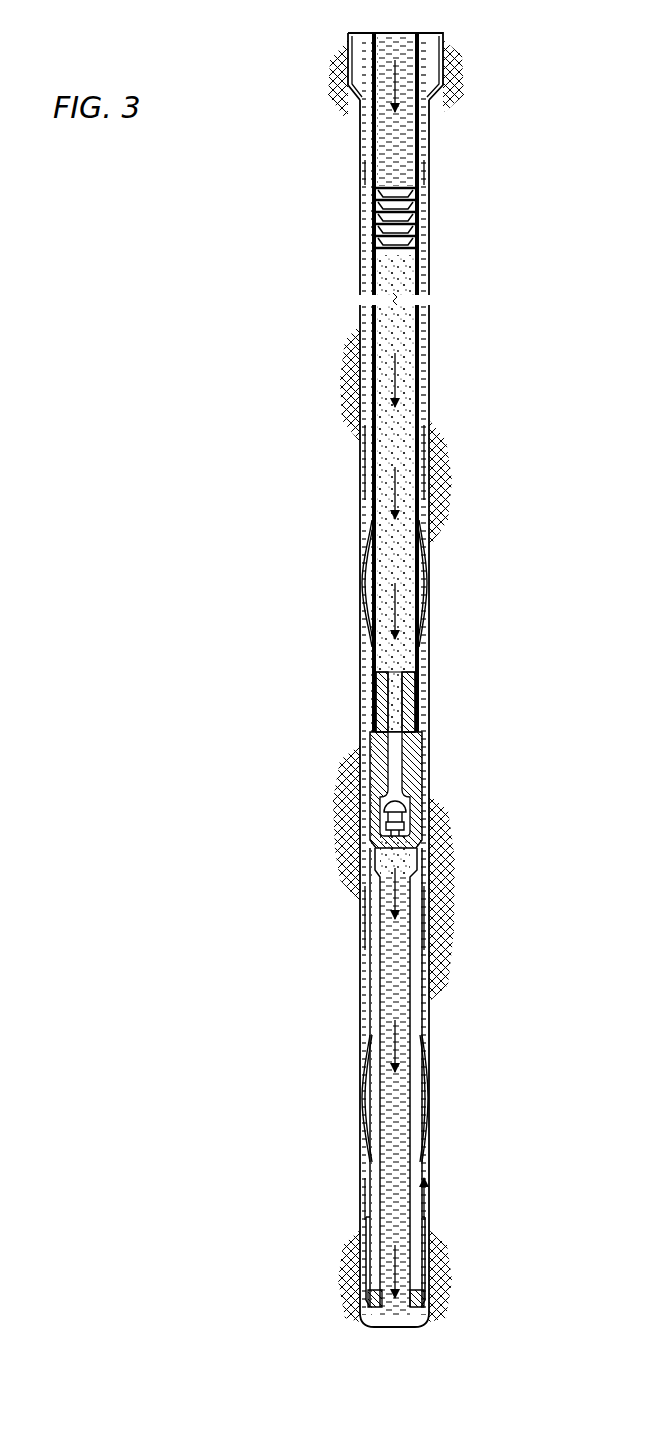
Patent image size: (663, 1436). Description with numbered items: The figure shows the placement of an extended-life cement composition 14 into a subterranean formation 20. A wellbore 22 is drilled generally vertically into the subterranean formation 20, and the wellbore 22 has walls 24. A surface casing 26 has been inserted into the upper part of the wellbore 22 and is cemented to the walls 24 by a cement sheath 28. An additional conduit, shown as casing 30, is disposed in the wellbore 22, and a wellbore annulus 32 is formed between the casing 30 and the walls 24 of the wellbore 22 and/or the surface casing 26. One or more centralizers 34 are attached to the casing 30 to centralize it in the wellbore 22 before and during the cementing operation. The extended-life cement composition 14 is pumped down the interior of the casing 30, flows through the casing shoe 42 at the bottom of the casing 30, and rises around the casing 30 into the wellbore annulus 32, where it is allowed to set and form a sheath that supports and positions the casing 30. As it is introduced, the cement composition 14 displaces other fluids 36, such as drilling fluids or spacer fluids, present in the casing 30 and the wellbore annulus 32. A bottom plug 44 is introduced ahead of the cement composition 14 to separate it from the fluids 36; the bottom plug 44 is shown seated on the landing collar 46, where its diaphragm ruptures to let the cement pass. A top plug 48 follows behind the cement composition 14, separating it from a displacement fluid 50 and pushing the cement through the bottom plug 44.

The extended-life cement composition 14 is at (395, 377).
The subterranean formation 20 is at (541, 683).
The wellbore 22 is at (436, 513).
The walls 24 is at (428, 245).
The surface casing 26 is at (445, 42).
The cement sheath 28 is at (445, 63).
The casing 30 is at (420, 405).
The wellbore annulus 32 is at (372, 490).
The centralizers 34 is at (362, 1062).
The fluids 36 is at (392, 875).
The casing shoe 42 is at (370, 1252).
The bottom plug 44 is at (372, 690).
The landing collar 46 is at (370, 765).
The top plug 48 is at (372, 237).
The displacement fluid 50 is at (393, 87).